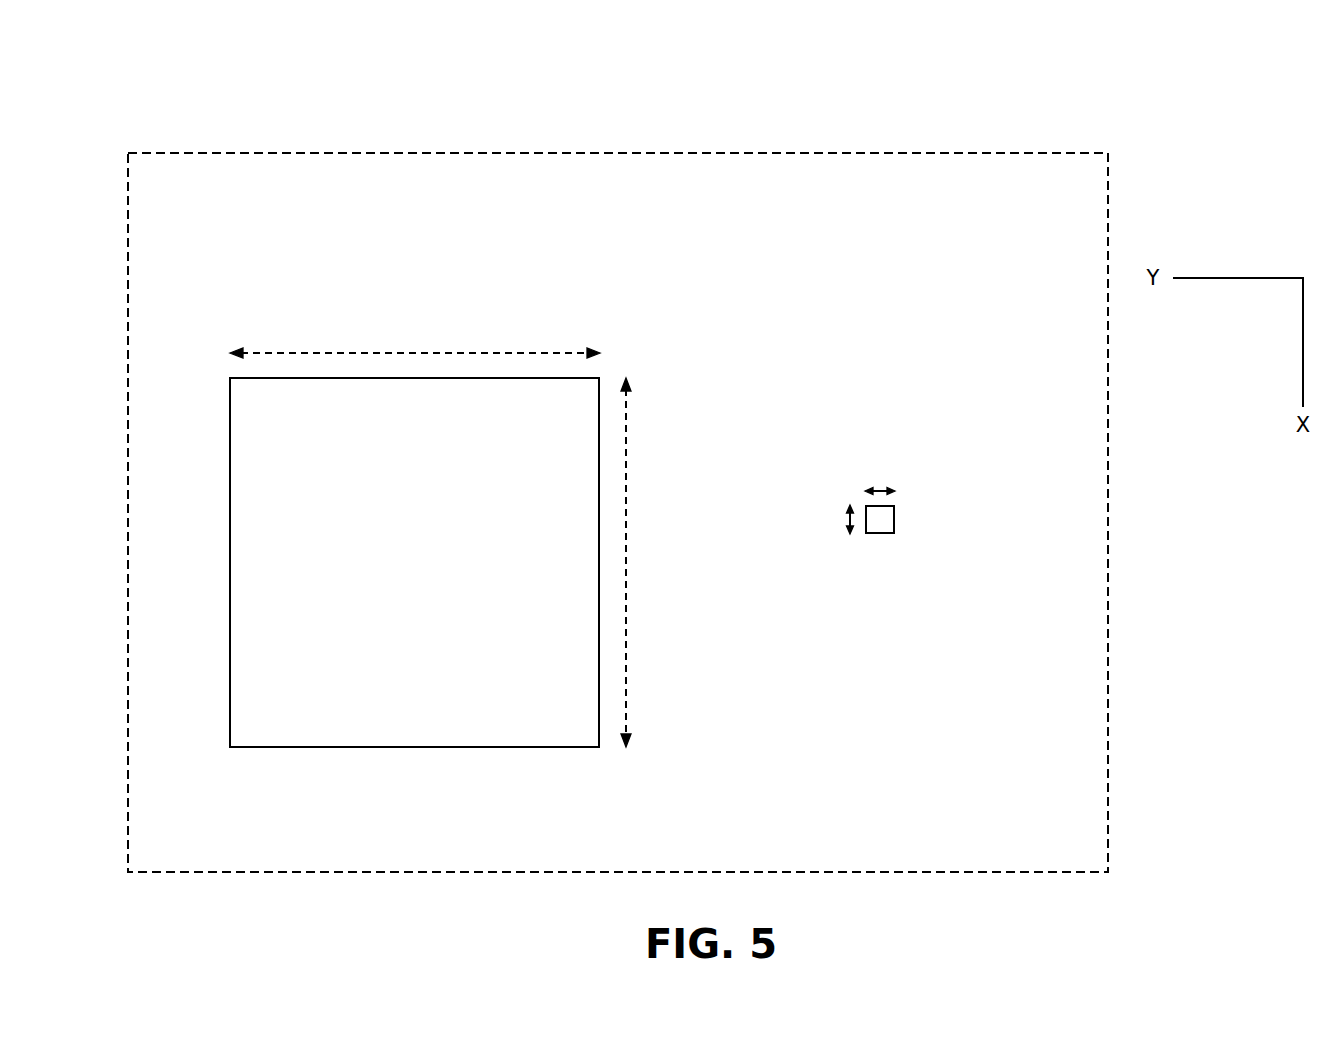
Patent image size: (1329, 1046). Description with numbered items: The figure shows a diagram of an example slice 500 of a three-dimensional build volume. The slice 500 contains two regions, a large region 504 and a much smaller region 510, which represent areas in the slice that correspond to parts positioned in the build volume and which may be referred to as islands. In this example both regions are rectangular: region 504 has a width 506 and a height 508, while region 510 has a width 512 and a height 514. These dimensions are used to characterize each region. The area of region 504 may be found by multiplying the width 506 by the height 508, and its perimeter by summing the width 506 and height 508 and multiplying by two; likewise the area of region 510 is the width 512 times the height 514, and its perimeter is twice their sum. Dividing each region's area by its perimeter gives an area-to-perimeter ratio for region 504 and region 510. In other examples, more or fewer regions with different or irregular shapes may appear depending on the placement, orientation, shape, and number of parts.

The slice 500 is at (265, 153).
The region 504 is at (268, 748).
The width 506 is at (415, 327).
The height 508 is at (664, 562).
The region 510 is at (878, 534).
The width 512 is at (879, 459).
The height 514 is at (807, 519).